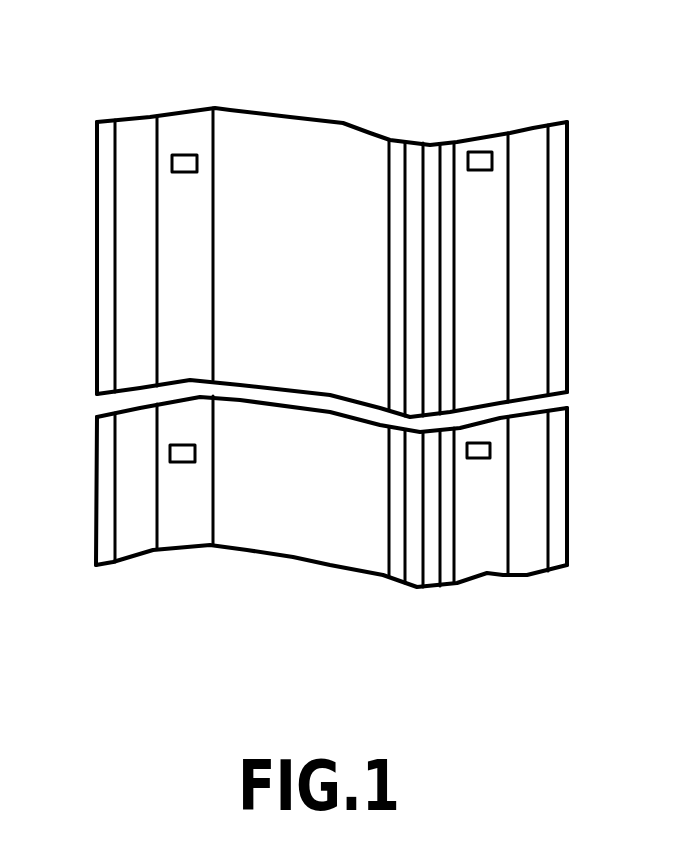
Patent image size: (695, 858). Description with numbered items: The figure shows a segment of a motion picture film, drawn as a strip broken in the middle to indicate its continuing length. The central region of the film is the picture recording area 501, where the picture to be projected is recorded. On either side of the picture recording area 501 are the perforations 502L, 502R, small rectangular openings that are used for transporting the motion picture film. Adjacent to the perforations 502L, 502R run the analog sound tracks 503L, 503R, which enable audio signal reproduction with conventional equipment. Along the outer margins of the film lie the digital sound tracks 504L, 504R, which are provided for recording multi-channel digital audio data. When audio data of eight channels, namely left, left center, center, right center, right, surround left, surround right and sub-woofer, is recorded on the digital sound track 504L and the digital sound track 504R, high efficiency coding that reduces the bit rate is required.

The picture recording area 501 is at (268, 137).
The perforation 502L is at (183, 158).
The perforation 502R is at (480, 160).
The analog sound track 503L is at (413, 180).
The analog sound track 503R is at (448, 152).
The digital sound track 504L is at (135, 137).
The digital sound track 504R is at (530, 150).